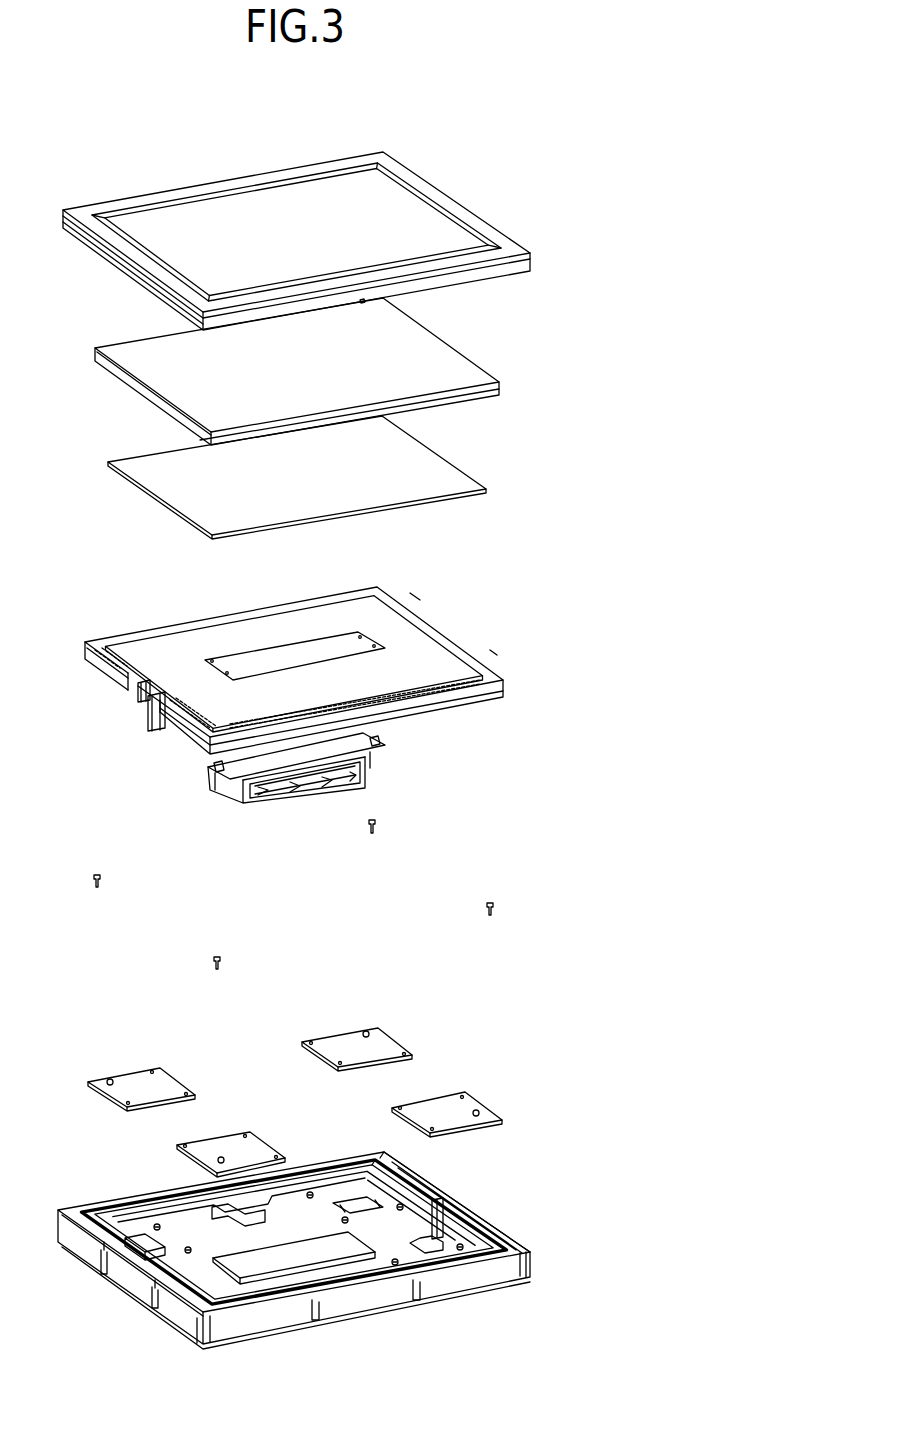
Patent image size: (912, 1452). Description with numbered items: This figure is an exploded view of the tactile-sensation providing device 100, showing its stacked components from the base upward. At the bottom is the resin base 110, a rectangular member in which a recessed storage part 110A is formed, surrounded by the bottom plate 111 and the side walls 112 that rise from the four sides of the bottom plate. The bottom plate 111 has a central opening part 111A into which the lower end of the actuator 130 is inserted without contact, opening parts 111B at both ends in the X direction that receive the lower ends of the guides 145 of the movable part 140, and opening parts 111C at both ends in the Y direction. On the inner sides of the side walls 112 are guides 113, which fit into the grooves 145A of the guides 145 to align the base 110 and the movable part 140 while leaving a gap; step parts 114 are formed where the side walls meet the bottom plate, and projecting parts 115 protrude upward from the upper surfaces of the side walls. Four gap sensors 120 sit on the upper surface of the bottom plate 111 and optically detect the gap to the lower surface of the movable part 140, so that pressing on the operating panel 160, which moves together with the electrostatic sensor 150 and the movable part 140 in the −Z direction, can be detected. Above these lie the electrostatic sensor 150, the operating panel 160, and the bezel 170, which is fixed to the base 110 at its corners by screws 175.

The tactile-sensation providing device 100 is at (610, 123).
The bezel 170 is at (483, 227).
The operating panel 160 is at (457, 372).
The electrostatic sensor 150 is at (430, 478).
The movable part 140 is at (312, 707).
The guide 145 is at (168, 727).
The groove 145A is at (148, 718).
The actuator 130 is at (367, 767).
The screw 175 is at (497, 908).
The gap sensor 120 is at (462, 1110).
The base 110 is at (330, 1242).
The storage part 110A is at (318, 1220).
The bottom plate 111 is at (208, 1280).
The opening part 111A is at (298, 1257).
The opening part 111B is at (473, 1220).
The opening part 111C is at (237, 1220).
The side wall 112 is at (138, 1270).
The guide 113 is at (440, 1233).
The step part 114 is at (227, 1198).
The projecting part 115 is at (520, 1238).